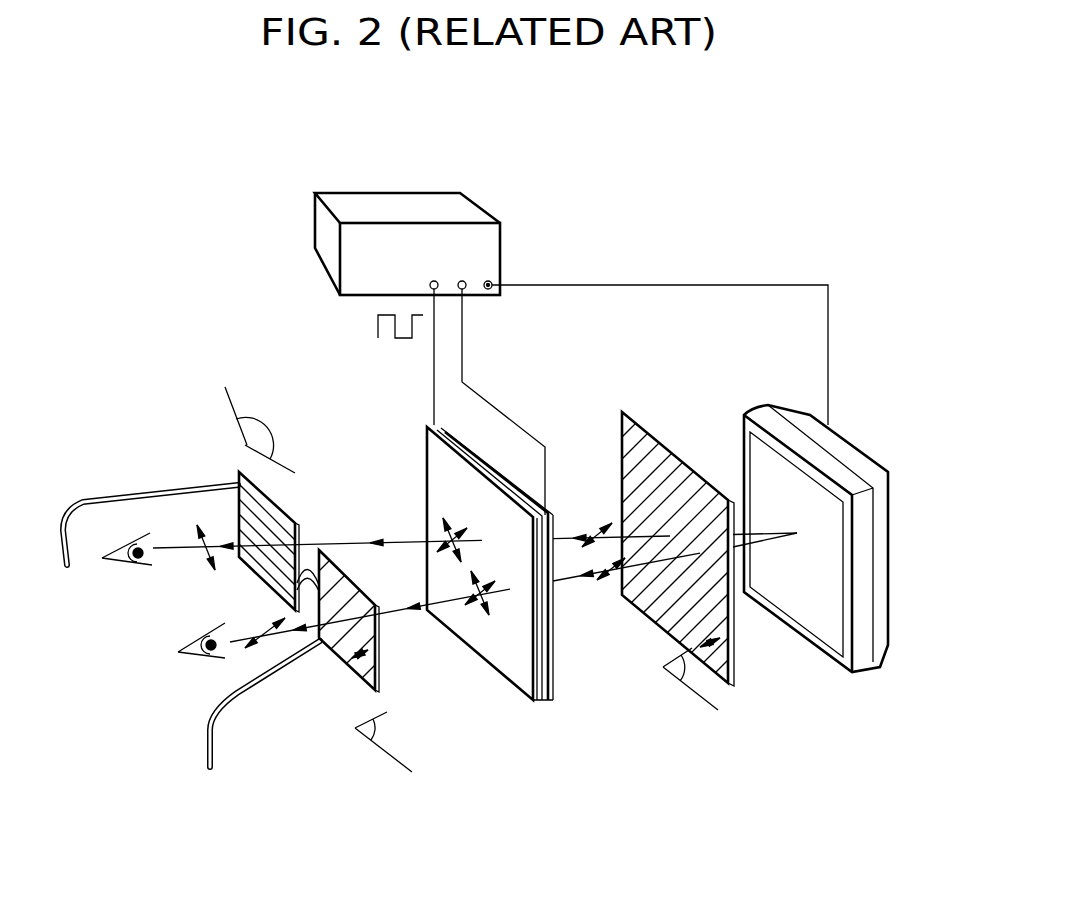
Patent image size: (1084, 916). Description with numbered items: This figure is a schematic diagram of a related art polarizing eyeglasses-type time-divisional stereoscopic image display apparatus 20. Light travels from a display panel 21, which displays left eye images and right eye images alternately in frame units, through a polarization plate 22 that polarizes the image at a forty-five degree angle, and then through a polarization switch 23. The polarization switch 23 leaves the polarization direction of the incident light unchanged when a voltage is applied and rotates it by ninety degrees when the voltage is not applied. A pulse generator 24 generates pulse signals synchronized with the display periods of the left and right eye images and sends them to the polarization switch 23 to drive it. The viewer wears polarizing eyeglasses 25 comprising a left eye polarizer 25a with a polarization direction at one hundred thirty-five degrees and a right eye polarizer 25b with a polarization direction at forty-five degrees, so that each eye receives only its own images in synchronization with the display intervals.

The stereoscopic image display apparatus 20 is at (614, 795).
The display panel 21 is at (860, 664).
The polarization plate 22 is at (735, 688).
The polarization switch 23 is at (553, 701).
The pulse generator 24 is at (470, 210).
The polarizing eyeglasses 25 is at (291, 584).
The left eye polarizer 25a is at (292, 515).
The right eye polarizer 25b is at (378, 637).